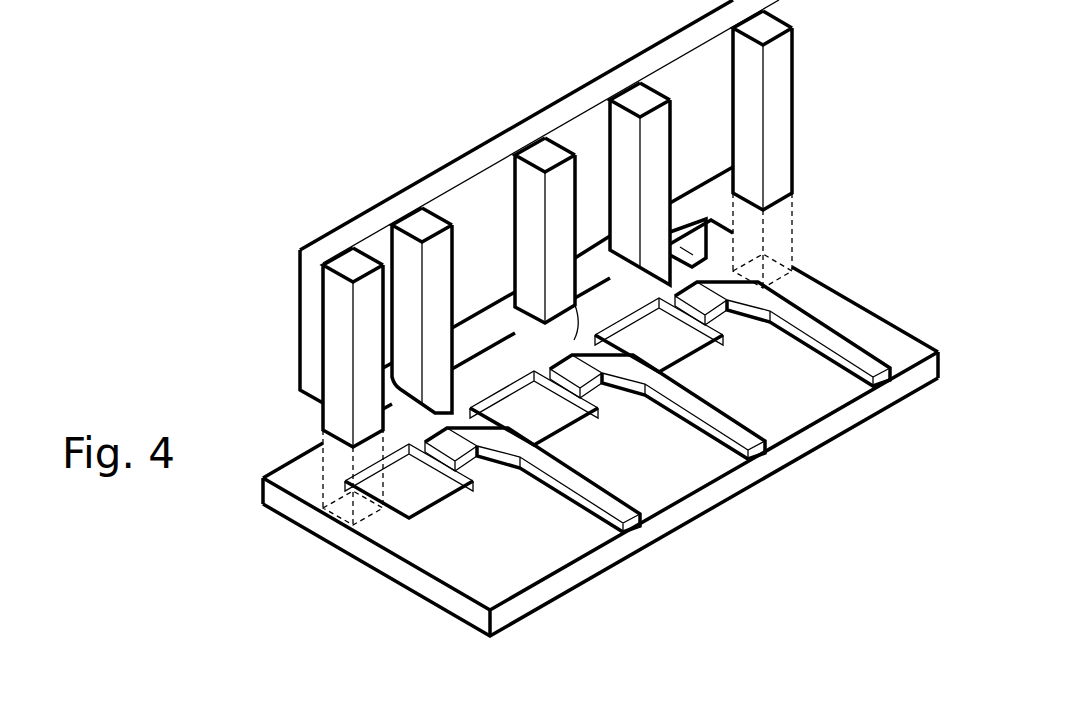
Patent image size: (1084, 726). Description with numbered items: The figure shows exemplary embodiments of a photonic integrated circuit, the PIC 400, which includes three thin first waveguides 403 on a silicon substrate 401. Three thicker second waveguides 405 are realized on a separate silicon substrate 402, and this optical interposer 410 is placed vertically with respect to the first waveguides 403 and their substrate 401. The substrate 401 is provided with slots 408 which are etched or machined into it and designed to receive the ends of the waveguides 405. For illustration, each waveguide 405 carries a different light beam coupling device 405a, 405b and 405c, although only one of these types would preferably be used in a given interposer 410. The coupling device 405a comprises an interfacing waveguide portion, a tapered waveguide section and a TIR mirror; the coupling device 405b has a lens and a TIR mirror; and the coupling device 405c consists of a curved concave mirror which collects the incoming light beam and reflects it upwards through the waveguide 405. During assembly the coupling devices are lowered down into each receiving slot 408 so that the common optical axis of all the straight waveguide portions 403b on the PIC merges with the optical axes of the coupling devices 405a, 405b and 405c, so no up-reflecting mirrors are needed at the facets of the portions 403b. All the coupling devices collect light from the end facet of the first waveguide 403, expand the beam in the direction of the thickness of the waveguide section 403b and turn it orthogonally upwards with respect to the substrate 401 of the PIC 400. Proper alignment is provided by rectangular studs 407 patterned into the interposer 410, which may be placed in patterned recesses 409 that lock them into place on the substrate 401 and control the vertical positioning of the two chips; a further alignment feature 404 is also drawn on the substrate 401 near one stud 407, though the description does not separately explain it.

The PIC 400 is at (458, 633).
The silicon substrate 401 is at (433, 585).
The silicon substrate 402 is at (307, 293).
The first waveguides 403 is at (878, 365).
The straight waveguide portions 403b is at (473, 457).
The guide hole 404 is at (732, 273).
The second waveguides 405 is at (516, 212).
The coupling device 405a is at (690, 237).
The coupling device 405b is at (527, 323).
The coupling device 405c is at (430, 407).
The studs 407 is at (337, 355).
The slots 408 is at (412, 488).
The patterned recesses 409 is at (350, 500).
The optical interposer 410 is at (267, 250).